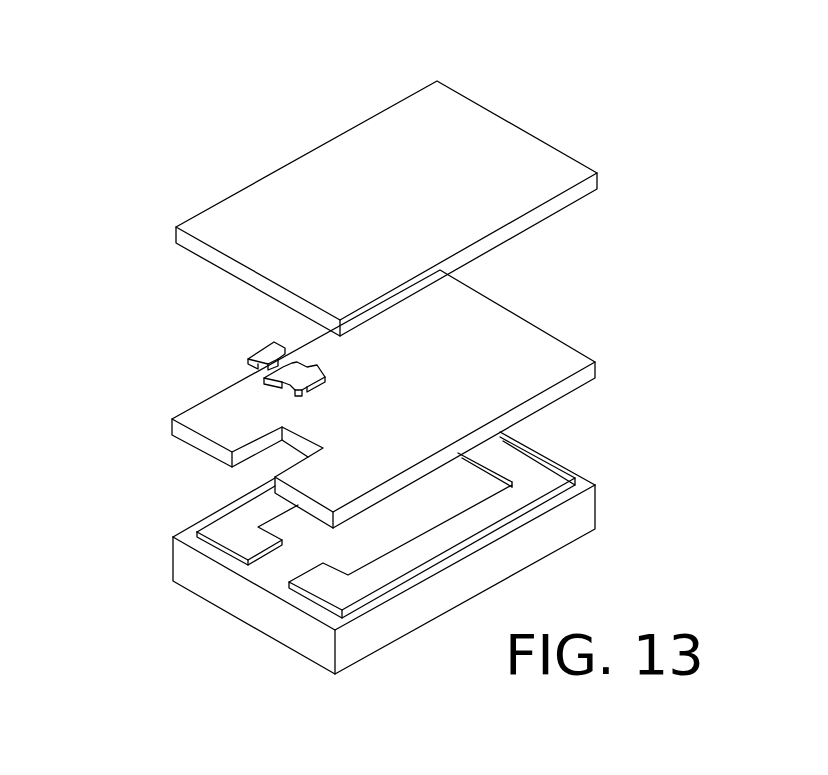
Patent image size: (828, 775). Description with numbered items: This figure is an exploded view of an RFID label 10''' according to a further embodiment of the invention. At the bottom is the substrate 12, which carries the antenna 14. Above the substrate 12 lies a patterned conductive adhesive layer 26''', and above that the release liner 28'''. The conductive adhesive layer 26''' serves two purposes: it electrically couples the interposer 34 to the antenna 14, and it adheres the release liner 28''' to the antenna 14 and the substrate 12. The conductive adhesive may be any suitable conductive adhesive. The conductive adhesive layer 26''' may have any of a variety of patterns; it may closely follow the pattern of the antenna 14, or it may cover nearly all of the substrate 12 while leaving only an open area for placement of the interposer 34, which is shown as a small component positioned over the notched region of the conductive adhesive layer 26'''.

The RFID label 10''' is at (371, 372).
The substrate 12 is at (583, 512).
The antenna 14 is at (537, 487).
The conductive adhesive layer 26''' is at (408, 399).
The release liner 28''' is at (429, 203).
The interposer 34 is at (238, 347).